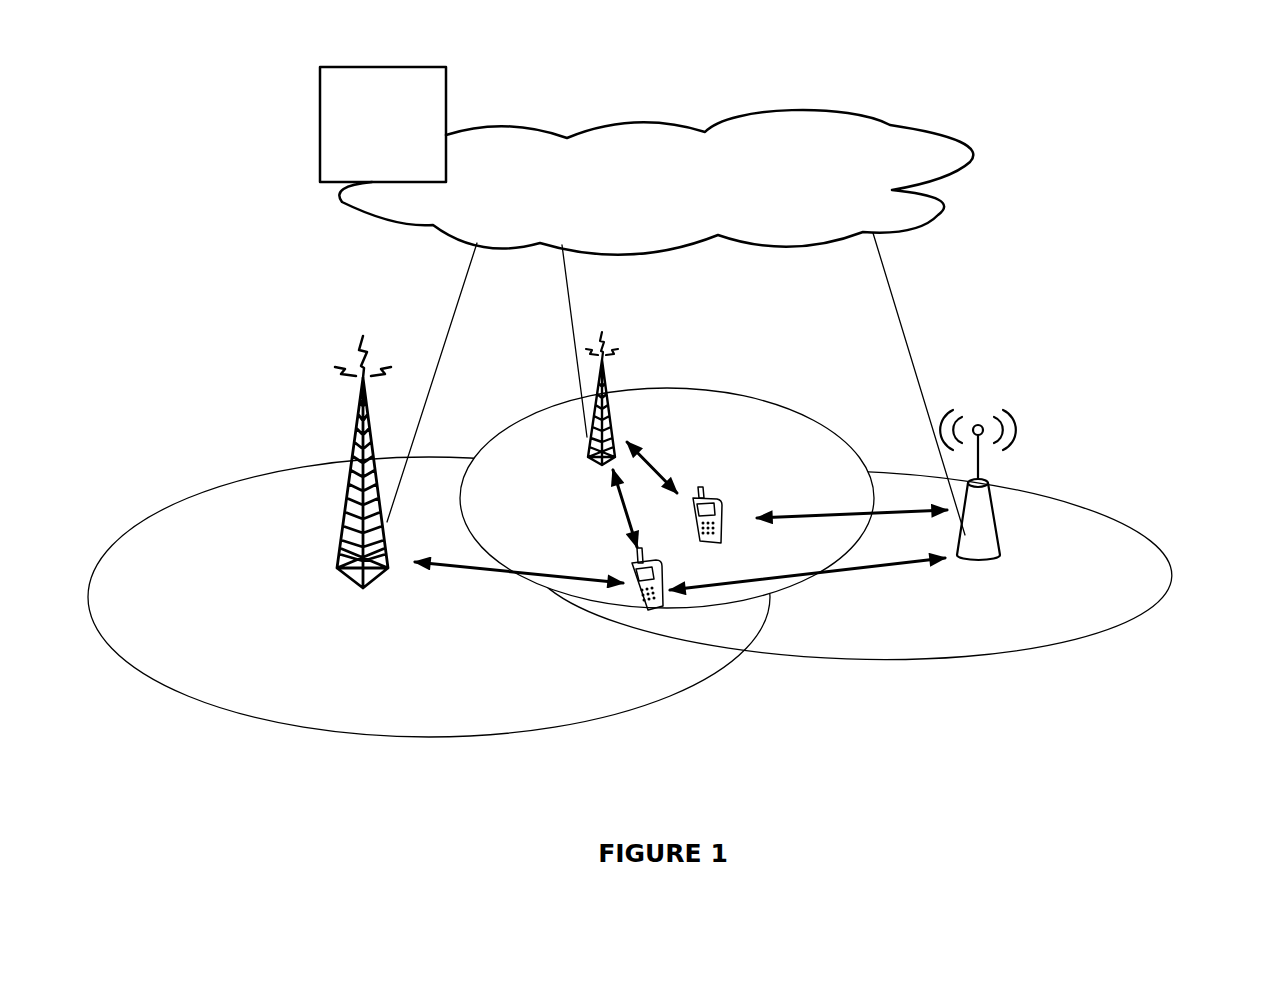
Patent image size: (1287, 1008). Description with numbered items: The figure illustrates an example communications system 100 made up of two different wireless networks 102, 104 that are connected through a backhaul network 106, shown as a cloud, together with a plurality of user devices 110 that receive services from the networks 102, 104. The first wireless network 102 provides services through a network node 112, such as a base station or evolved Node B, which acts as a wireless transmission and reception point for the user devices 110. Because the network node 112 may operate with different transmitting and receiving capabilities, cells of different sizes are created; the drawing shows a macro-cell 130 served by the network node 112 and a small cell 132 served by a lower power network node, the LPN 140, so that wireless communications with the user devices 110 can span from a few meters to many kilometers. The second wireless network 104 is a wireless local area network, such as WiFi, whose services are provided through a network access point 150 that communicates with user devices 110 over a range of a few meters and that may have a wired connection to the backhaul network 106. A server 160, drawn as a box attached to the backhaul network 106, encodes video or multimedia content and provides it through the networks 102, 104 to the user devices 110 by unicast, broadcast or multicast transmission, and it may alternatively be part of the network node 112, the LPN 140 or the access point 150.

The communications system 100 is at (661, 453).
The wireless network 102 is at (661, 537).
The wireless network 104 is at (1100, 503).
The backhaul network 106 is at (656, 322).
The user device 110 is at (718, 497).
The network node 112 is at (337, 537).
The macro-cell 130 is at (237, 692).
The small cell 132 is at (530, 511).
The lower power network node (LPN) 140 is at (605, 356).
The network access point 150 is at (975, 483).
The server 160 is at (383, 124).